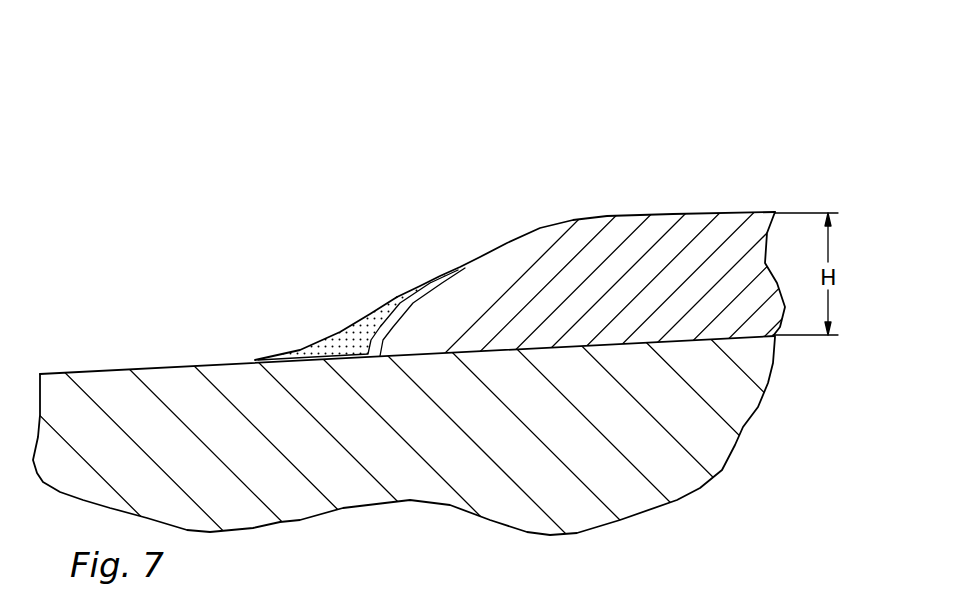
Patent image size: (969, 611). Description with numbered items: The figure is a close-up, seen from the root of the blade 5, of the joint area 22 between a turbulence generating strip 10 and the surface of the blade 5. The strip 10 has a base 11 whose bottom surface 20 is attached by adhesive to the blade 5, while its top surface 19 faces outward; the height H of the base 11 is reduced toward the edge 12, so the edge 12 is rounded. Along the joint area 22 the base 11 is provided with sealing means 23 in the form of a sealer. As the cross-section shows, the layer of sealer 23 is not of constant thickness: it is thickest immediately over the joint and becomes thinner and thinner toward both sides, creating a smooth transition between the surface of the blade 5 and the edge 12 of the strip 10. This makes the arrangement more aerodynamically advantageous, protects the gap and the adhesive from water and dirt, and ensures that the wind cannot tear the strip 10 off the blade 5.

The blade 5 is at (115, 384).
The turbulence generating strip 10 is at (766, 138).
The base 11 is at (595, 263).
The edge 12 is at (445, 272).
The top surface 19 is at (687, 213).
The bottom surface 20 is at (628, 337).
The joint area 22 is at (356, 298).
The sealing means 23 is at (320, 342).